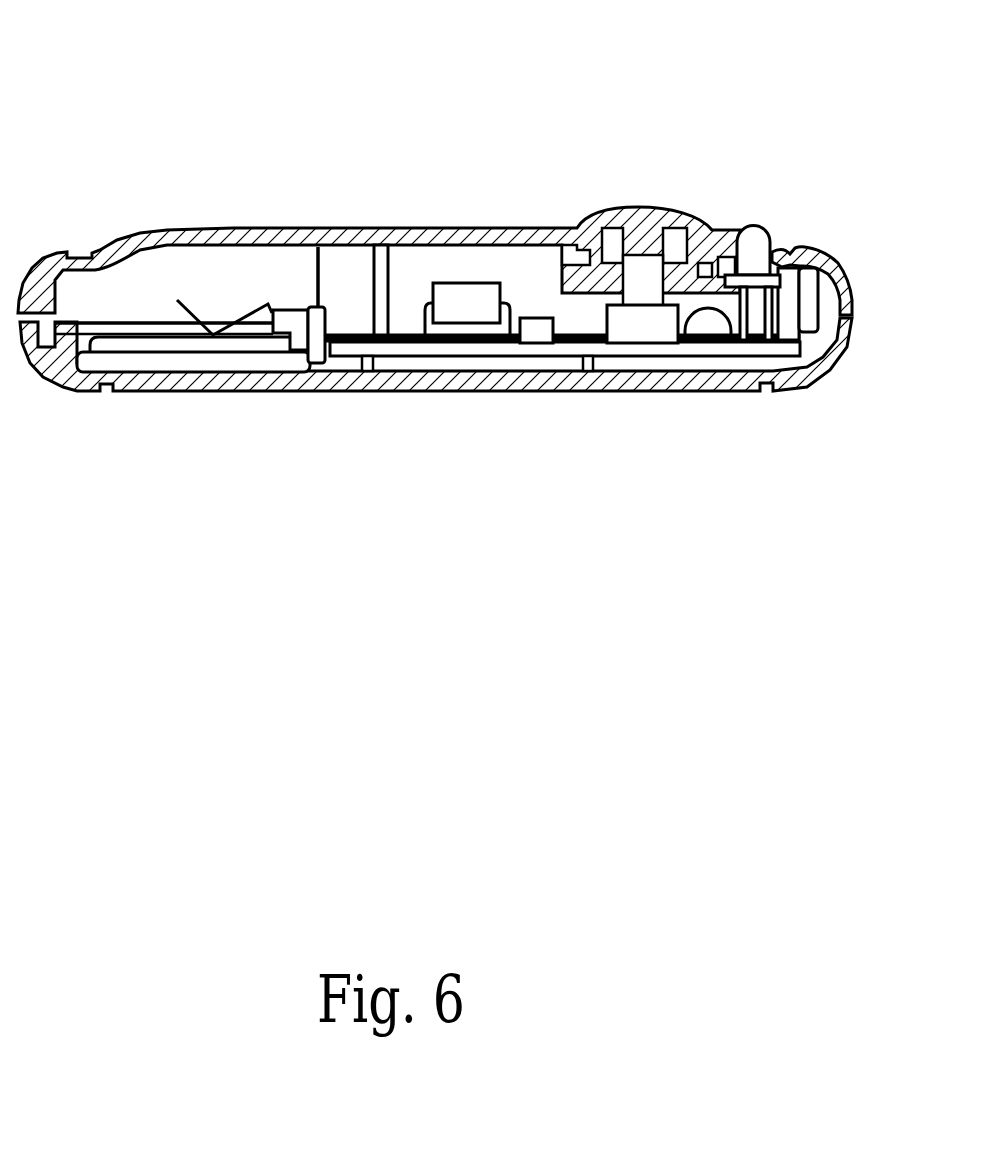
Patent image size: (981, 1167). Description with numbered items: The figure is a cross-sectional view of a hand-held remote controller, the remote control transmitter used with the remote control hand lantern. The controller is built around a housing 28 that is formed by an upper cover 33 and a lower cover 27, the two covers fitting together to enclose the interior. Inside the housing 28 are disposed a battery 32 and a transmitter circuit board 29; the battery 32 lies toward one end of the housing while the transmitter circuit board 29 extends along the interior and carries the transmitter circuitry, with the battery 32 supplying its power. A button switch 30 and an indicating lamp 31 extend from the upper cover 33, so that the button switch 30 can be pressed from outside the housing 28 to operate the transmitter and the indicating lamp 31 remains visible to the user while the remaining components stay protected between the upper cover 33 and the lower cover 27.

The lower cover 27 is at (720, 385).
The housing 28 is at (393, 230).
The transmitter circuit board 29 is at (545, 345).
The button switch 30 is at (647, 230).
The indicating lamp 31 is at (758, 250).
The battery 32 is at (202, 357).
The upper cover 33 is at (241, 233).